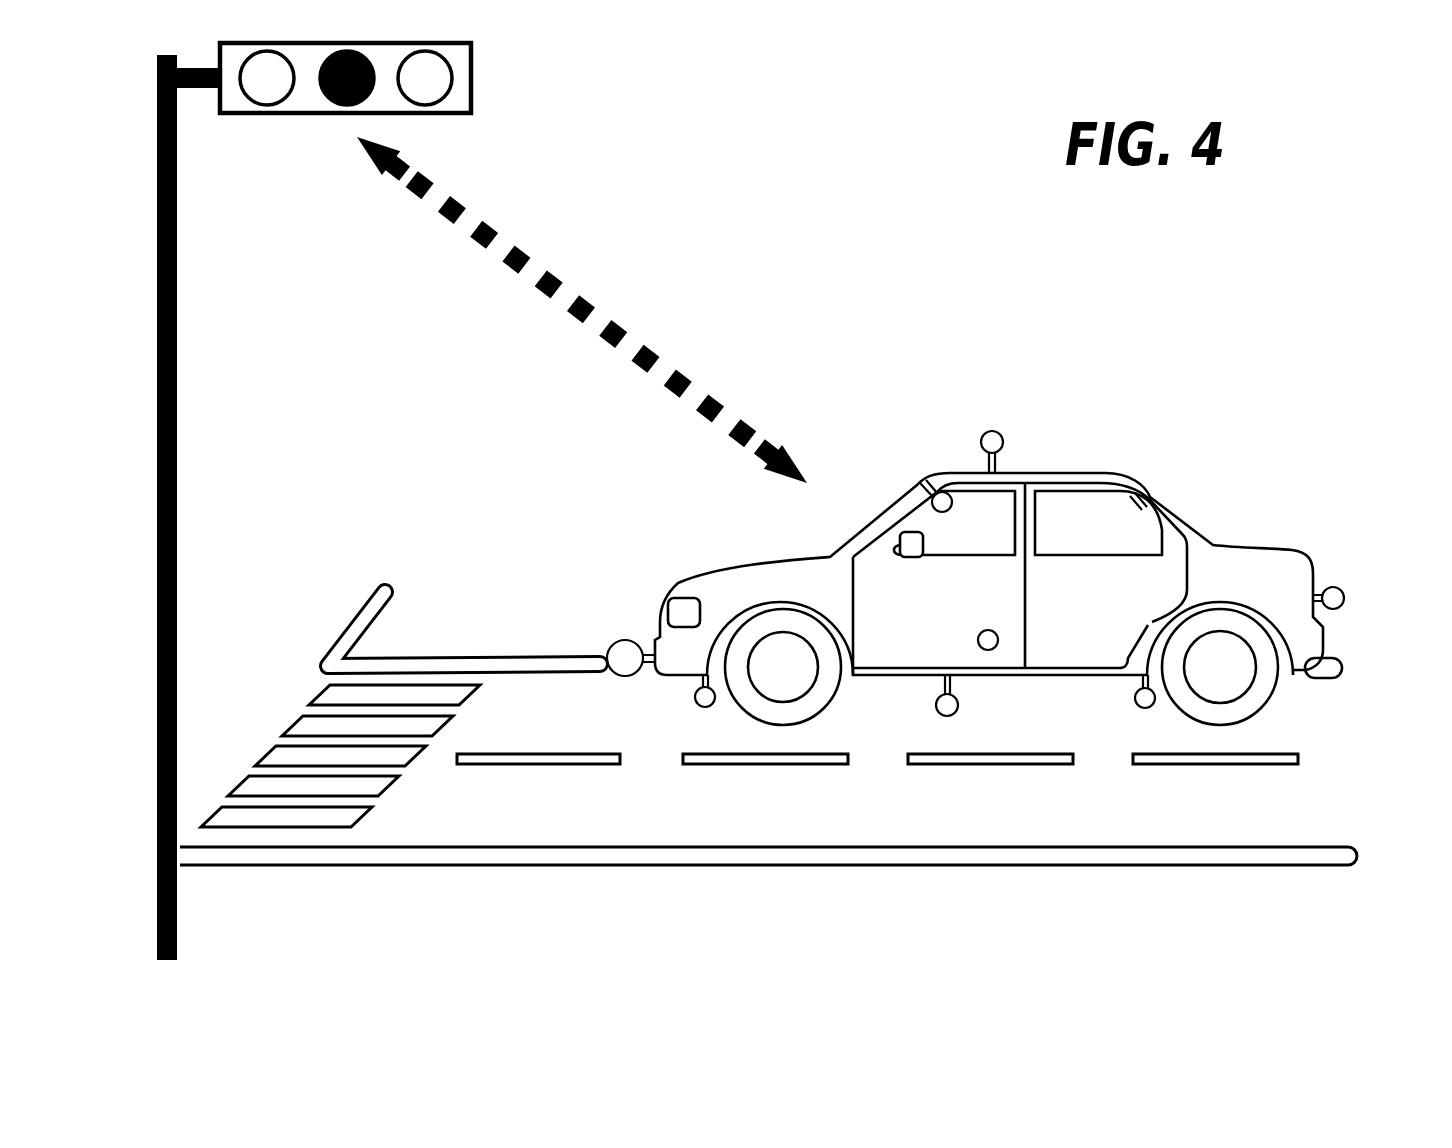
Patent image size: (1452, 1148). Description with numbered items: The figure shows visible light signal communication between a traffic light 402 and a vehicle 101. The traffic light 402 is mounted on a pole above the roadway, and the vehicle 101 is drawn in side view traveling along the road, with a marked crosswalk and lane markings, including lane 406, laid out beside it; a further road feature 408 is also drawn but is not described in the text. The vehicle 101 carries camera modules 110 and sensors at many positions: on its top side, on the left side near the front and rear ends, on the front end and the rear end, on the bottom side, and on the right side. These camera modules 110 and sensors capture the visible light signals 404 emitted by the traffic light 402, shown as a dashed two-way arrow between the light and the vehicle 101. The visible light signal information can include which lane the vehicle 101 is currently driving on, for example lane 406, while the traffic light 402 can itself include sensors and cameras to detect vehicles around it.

The first vehicle 101 is at (1279, 502).
The traffic light 402 is at (475, 97).
The visible light signals 404 is at (590, 310).
The lane 406 is at (400, 709).
The road 408 is at (768, 809).
The camera modules 110 is at (1010, 579).